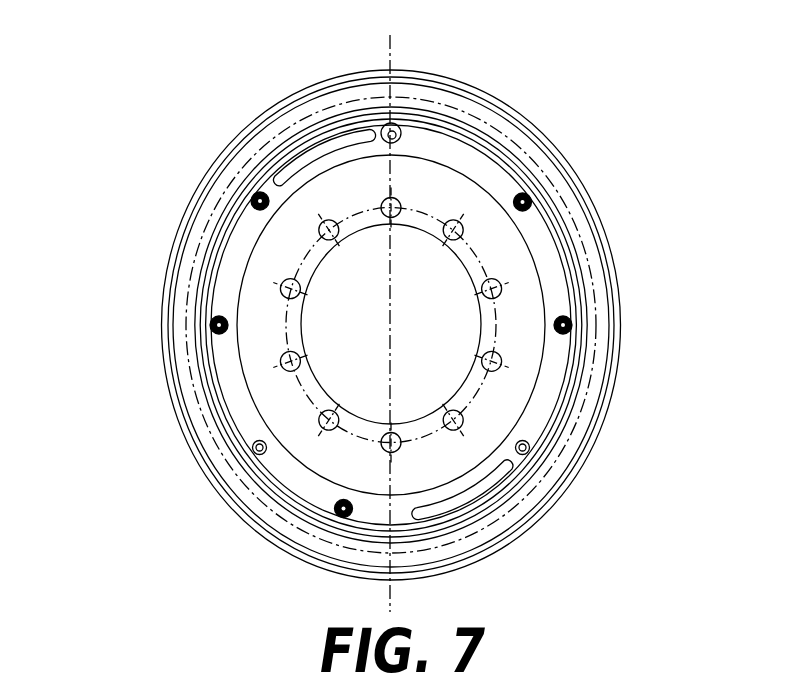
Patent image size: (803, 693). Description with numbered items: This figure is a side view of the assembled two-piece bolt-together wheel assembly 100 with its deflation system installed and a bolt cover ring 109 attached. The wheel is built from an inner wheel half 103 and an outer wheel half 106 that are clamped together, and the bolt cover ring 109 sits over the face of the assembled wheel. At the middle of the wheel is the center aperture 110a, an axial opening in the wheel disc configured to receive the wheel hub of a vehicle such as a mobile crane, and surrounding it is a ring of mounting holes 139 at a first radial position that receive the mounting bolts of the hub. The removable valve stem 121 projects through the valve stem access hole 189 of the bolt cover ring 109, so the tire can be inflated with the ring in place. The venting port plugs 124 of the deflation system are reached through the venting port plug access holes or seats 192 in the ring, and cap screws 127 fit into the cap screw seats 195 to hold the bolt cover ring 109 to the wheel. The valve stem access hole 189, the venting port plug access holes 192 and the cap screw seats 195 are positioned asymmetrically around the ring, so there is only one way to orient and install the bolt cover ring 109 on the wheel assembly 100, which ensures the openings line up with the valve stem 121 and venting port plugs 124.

The wheel assembly 100 is at (262, 61).
The inner wheel half 103 is at (247, 374).
The outer wheel half 106 is at (179, 307).
The bolt cover ring 109 is at (217, 296).
The center aperture 110a is at (436, 284).
The removable valve stem 121 is at (396, 126).
The venting port plugs 124 is at (232, 497).
The cap screws 127 is at (256, 182).
The mounting holes 139 is at (486, 357).
The valve stem access hole 189 is at (401, 137).
The venting port plug access hole 192 is at (259, 443).
The cap screw seat 195 is at (250, 193).